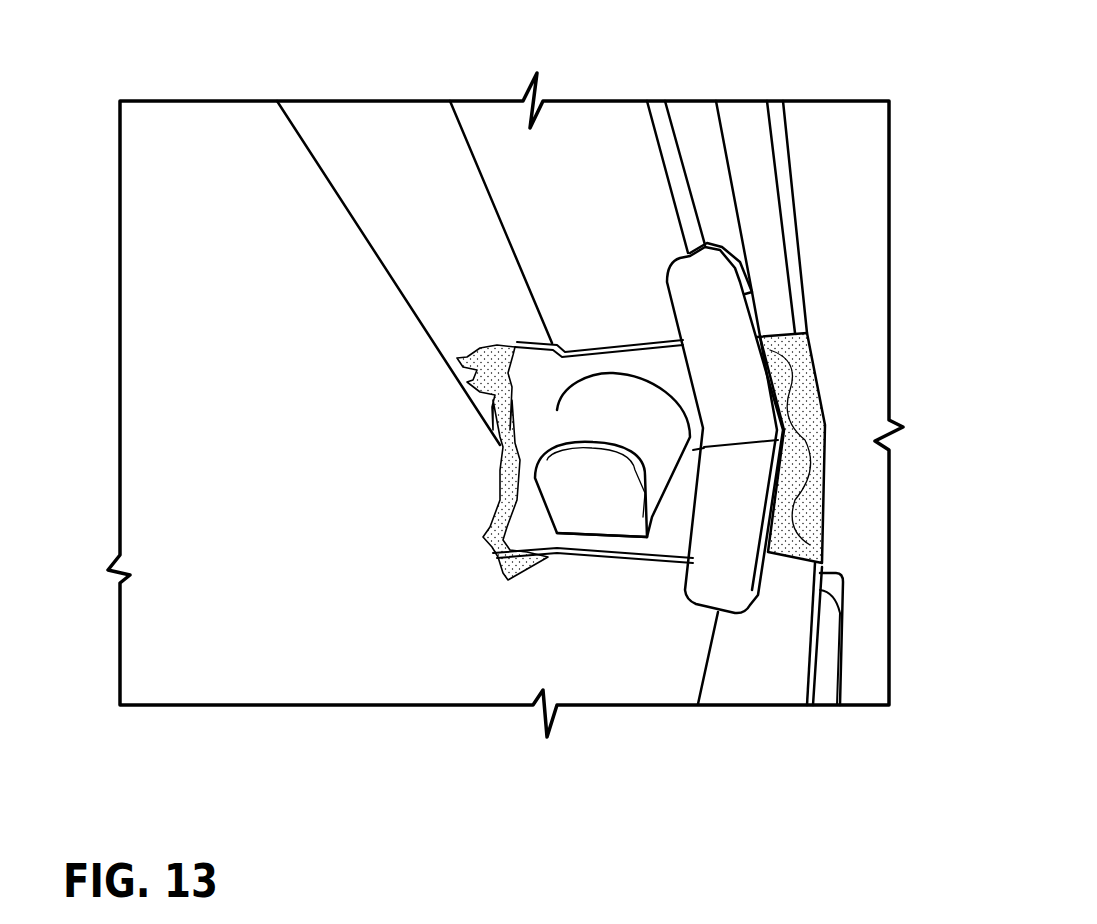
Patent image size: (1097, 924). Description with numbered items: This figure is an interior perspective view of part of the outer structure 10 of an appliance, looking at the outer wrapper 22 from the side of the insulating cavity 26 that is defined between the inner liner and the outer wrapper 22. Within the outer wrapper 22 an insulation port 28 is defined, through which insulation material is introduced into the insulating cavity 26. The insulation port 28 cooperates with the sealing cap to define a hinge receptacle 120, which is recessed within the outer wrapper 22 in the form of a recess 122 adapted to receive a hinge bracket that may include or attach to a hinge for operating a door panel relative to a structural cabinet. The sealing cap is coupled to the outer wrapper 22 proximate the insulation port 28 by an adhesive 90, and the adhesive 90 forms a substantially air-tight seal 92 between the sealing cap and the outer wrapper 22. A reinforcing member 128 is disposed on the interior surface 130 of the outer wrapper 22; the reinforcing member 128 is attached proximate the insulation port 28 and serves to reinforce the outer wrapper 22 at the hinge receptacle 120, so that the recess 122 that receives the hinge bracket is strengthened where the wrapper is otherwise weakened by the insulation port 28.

The outer structure 10 is at (347, 80).
The outer wrapper 22 is at (557, 168).
The insulating cavity 26 is at (197, 363).
The insulation port 28 is at (643, 325).
The adhesive 90 is at (473, 378).
The air-tight seal 92 is at (565, 338).
The hinge receptacle 120 is at (628, 540).
The recess 122 is at (665, 430).
The reinforcing member 128 is at (597, 417).
The interior surface 130 is at (381, 500).